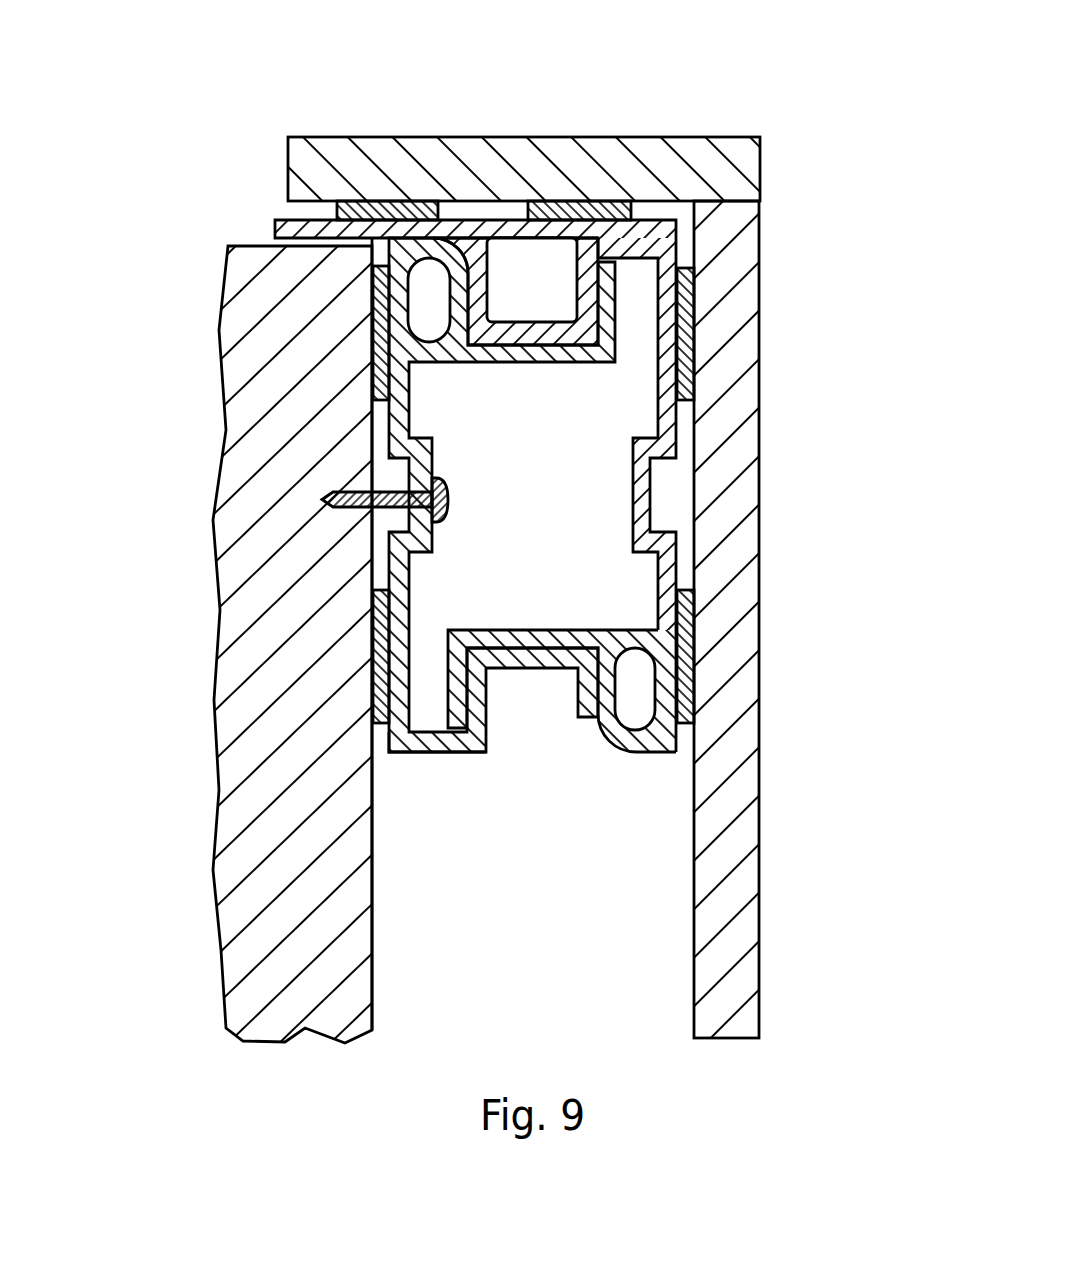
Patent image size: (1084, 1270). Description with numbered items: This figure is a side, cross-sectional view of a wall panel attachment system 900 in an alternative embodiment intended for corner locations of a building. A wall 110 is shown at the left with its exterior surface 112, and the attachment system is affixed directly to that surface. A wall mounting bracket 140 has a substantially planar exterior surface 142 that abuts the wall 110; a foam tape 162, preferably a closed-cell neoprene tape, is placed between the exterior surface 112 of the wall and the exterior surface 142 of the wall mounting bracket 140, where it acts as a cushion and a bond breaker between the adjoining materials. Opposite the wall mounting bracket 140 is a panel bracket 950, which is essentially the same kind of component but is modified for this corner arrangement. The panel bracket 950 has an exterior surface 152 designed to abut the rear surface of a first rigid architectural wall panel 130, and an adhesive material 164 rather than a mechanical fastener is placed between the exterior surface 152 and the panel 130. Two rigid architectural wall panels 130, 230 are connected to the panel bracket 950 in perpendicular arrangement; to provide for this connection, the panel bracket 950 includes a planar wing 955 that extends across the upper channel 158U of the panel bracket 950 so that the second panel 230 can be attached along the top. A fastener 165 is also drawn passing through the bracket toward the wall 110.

The wall panel attachment system 900 is at (247, 54).
The planar wing 955 is at (320, 220).
The adhesive material 164 is at (378, 202).
The rigid architectural wall panel 230 is at (537, 137).
The foam tape 162 is at (375, 332).
The exterior surface 152 is at (677, 422).
The fastener 165 is at (448, 499).
The exterior surface 142 is at (392, 565).
The wall 110 is at (325, 810).
The wall mounting bracket 140 is at (428, 753).
The exterior surface 112 is at (372, 888).
The panel bracket 950 is at (636, 753).
The rigid architectural wall panel 130 is at (760, 874).
The upper channel 158U is at (566, 294).